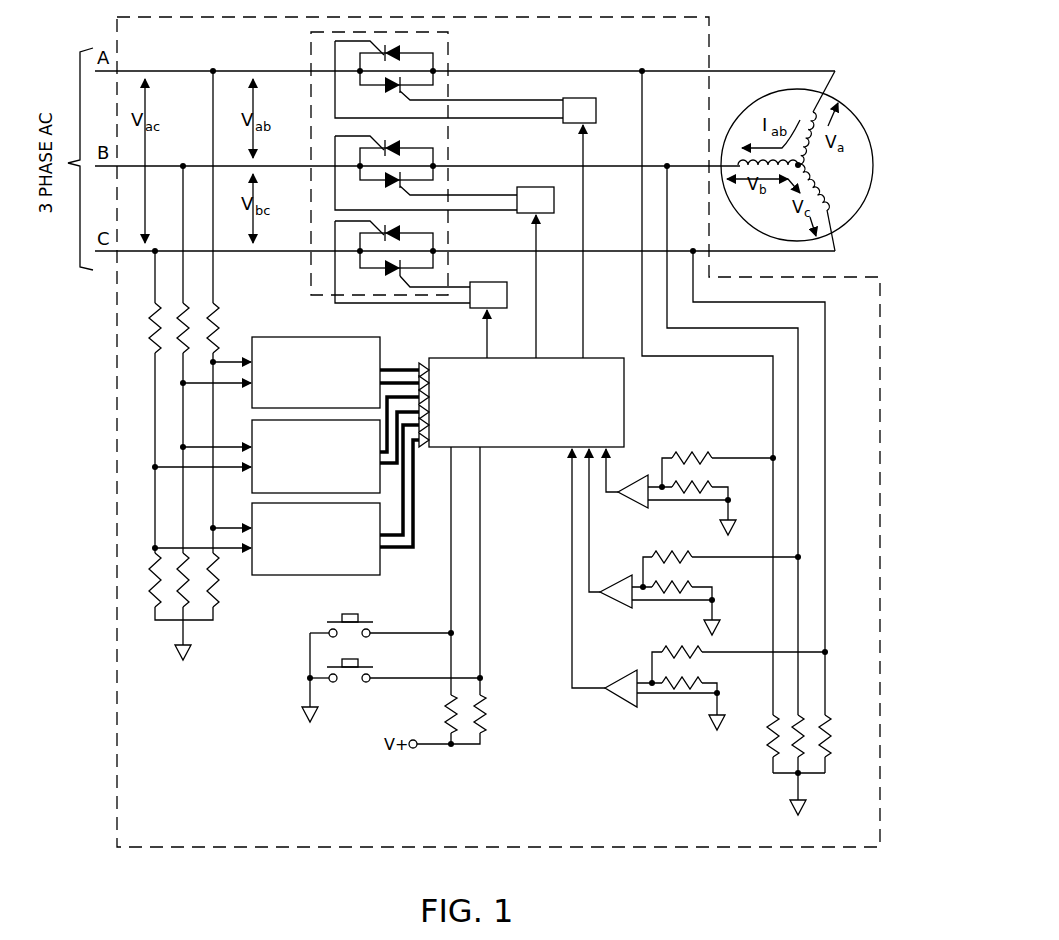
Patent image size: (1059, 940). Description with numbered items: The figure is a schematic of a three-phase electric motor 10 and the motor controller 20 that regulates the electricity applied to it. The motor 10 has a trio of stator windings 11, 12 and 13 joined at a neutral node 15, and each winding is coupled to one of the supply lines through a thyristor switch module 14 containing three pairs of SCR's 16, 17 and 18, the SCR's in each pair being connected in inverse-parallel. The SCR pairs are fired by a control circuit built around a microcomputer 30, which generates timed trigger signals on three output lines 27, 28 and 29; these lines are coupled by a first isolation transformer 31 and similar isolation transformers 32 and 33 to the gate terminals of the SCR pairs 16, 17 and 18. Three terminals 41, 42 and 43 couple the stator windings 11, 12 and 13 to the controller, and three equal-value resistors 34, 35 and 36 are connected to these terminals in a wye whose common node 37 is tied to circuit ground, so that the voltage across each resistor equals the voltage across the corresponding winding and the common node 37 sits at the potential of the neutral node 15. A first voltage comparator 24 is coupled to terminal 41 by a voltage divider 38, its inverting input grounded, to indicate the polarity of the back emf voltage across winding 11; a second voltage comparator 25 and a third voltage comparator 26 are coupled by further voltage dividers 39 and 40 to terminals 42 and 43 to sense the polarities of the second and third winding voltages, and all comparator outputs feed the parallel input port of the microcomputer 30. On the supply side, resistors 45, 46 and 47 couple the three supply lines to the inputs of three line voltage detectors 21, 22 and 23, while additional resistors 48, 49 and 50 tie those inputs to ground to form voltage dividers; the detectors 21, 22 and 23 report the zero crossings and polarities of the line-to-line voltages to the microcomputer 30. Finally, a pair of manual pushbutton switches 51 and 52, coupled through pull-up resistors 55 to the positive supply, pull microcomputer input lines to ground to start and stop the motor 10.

The three-phase electric motor 10 is at (776, 218).
The stator winding 11 is at (806, 88).
The stator winding 12 is at (735, 157).
The stator winding 13 is at (830, 212).
The thyristor switch module 14 is at (452, 54).
The neutral node 15 is at (809, 163).
The first pair of SCR's 16 is at (365, 68).
The second pair of SCR's 17 is at (365, 163).
The third pair of SCR's 18 is at (365, 248).
The motor controller 20 is at (196, 811).
The line voltage detector 21 is at (345, 337).
The line voltage detector 22 is at (253, 430).
The line voltage detector 23 is at (253, 512).
The first voltage comparator 24 is at (645, 478).
The second voltage comparator 25 is at (622, 578).
The third voltage comparator 26 is at (614, 672).
The first output line 27 is at (583, 342).
The trigger signal output line 28 is at (536, 342).
The trigger signal output line 29 is at (487, 342).
The microcomputer 30 is at (625, 381).
The first isolation transformer 31 is at (589, 100).
The isolation transformer 32 is at (535, 189).
The isolation transformer 33 is at (487, 283).
The resistor 34 is at (769, 742).
The resistor 35 is at (802, 752).
The resistor 36 is at (828, 718).
The common node 37 is at (801, 776).
The voltage divider 38 is at (708, 474).
The voltage divider 39 is at (700, 576).
The voltage divider 40 is at (705, 668).
The terminal 41 is at (640, 67).
The terminal 42 is at (667, 161).
The terminal 43 is at (692, 248).
The resistor 45 is at (216, 312).
The resistor 46 is at (178, 317).
The resistor 47 is at (149, 316).
The resistor 48 is at (221, 586).
The resistor 49 is at (179, 558).
The resistor 50 is at (152, 607).
The first pushbutton switch 51 is at (318, 628).
The second pushbutton switch 52 is at (320, 668).
The pull-up resistors 55 is at (488, 716).